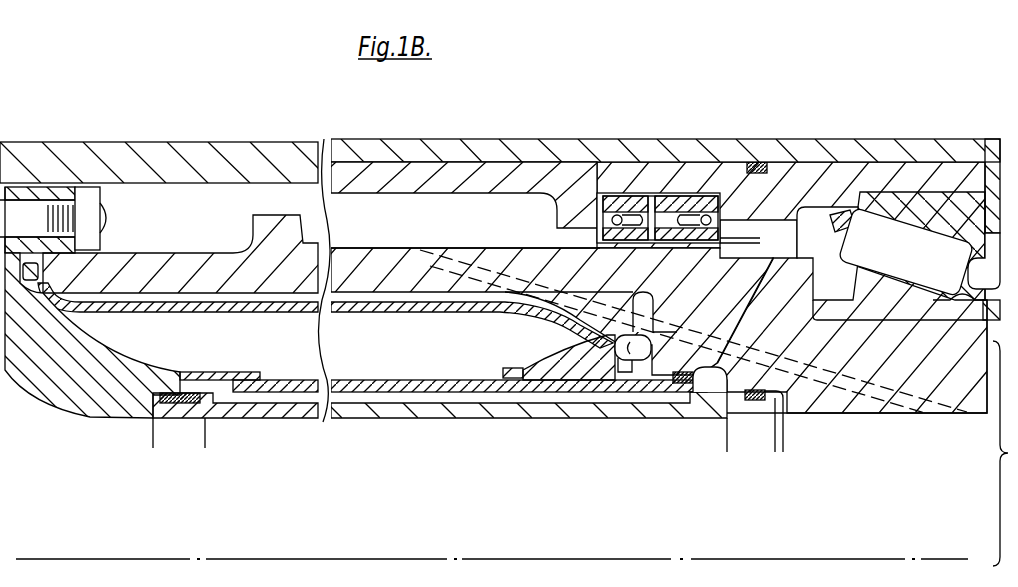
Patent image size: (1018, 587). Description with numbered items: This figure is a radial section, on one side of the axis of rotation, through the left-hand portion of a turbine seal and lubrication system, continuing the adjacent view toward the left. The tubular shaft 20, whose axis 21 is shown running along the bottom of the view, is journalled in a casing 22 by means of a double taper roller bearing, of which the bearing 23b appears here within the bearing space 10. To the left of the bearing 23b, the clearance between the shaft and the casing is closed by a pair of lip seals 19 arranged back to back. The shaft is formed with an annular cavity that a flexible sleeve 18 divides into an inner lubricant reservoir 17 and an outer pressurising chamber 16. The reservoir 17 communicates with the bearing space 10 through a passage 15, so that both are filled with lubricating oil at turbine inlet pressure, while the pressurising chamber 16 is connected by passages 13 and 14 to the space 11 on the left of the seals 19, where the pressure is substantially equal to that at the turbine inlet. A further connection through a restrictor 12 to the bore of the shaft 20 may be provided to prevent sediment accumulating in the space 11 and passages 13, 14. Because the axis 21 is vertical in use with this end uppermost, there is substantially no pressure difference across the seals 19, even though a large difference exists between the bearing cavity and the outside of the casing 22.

The bearing space 10 is at (997, 247).
The space to the left of the seals 11 is at (120, 228).
The restrictor 12 is at (707, 383).
The passage 13 is at (603, 320).
The passage 14 is at (682, 360).
The passage 15 is at (768, 283).
The pressurising chamber 16 is at (143, 298).
The lubricant reservoir 17 is at (218, 353).
The flexible sleeve 18 is at (267, 305).
The lip seals 19 is at (690, 205).
The tubular shaft 20 is at (973, 403).
The axis 21 is at (622, 559).
The casing 22 is at (245, 165).
The taper roller bearing 23b is at (893, 233).